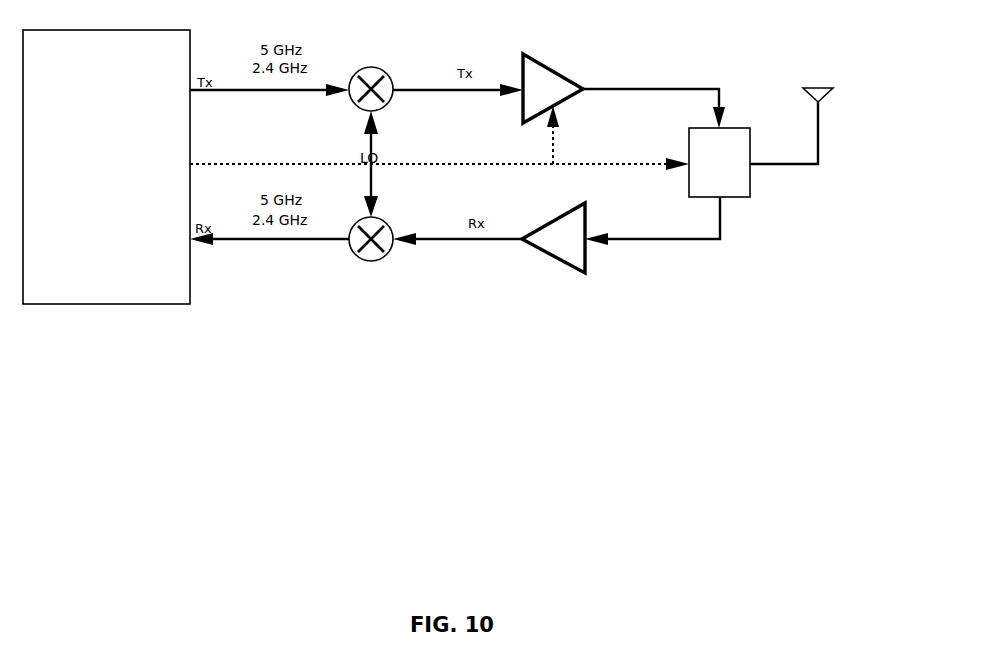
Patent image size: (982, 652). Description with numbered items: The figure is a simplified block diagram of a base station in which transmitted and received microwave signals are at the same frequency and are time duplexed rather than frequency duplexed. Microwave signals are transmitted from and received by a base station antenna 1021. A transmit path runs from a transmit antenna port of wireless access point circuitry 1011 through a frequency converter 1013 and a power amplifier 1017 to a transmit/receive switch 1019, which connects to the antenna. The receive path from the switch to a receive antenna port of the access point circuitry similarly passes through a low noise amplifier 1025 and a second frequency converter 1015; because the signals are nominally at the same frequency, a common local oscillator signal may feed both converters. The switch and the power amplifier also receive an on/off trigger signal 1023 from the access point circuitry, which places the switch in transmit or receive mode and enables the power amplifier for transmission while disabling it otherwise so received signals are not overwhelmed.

The wireless access point circuitry 1011 is at (100, 305).
The frequency converter 1013 is at (383, 68).
The frequency converter 1015 is at (362, 260).
The power amplifier 1017 is at (572, 83).
The transmit/receive switch 1019 is at (745, 199).
The base station antenna 1021 is at (825, 95).
The trigger signal 1023 is at (623, 165).
The low noise amplifier 1025 is at (583, 273).